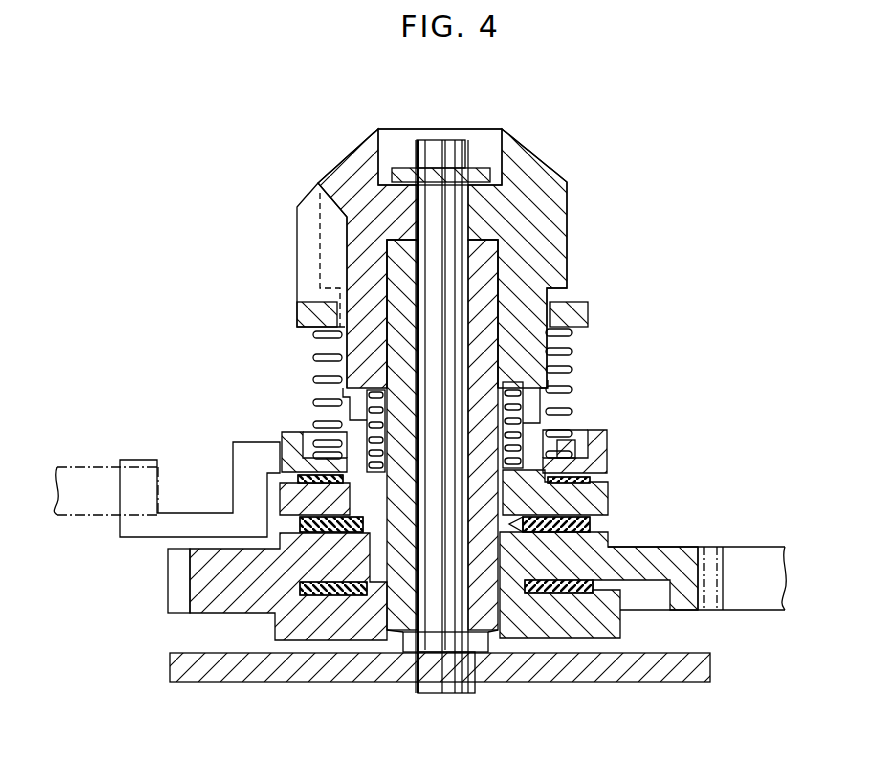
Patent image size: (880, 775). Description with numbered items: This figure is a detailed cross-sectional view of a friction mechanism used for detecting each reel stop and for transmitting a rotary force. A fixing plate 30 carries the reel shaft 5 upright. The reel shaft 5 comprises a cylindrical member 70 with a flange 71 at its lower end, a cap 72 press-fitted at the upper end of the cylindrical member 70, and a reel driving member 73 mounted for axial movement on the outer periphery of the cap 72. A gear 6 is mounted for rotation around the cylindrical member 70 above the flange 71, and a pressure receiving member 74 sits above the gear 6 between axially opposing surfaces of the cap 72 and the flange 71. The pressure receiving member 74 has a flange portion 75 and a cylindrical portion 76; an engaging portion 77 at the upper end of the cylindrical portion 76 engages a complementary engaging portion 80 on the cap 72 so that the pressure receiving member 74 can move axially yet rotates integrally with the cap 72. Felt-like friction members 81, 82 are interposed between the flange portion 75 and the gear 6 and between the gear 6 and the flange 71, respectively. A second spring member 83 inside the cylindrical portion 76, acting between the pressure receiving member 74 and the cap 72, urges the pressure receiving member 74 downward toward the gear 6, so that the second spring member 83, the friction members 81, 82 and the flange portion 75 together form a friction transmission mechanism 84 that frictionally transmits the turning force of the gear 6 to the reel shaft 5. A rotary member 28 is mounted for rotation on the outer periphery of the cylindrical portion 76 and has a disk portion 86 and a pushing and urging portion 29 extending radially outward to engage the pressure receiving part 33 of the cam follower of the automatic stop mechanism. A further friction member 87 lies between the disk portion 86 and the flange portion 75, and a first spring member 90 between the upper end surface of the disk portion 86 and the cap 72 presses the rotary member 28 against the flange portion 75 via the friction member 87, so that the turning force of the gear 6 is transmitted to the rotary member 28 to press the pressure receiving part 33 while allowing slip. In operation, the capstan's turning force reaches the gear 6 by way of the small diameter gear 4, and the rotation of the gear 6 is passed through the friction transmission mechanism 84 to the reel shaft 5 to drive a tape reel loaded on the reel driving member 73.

The small diameter gear 4 is at (766, 614).
The reel shaft 5 is at (557, 158).
The gear 6 is at (685, 560).
The rotary member 28 is at (600, 447).
The pushing and urging portion 29 is at (167, 528).
The fixing plate 30 is at (648, 684).
The pressure receiving part 33 is at (80, 513).
The cylindrical member 70 is at (482, 357).
The flange 71 is at (614, 623).
The cap 72 is at (558, 220).
The reel driving member 73 is at (303, 318).
The pressure receiving member 74 is at (616, 492).
The flange portion 75 is at (293, 455).
The cylindrical portion 76 is at (357, 432).
The engaging portion 77 is at (355, 397).
The complementary engaging portion 80 is at (530, 400).
The friction member 81 is at (592, 522).
The friction member 82 is at (300, 597).
The second spring member 83 is at (512, 427).
The friction transmission mechanism 84 is at (618, 520).
The disk portion 86 is at (297, 440).
The friction member 87 is at (313, 490).
The first spring member 90 is at (315, 356).